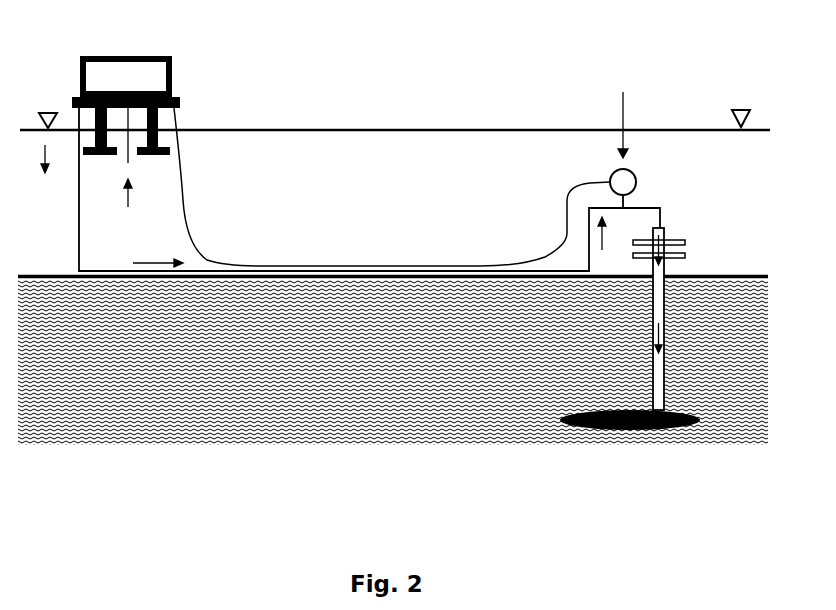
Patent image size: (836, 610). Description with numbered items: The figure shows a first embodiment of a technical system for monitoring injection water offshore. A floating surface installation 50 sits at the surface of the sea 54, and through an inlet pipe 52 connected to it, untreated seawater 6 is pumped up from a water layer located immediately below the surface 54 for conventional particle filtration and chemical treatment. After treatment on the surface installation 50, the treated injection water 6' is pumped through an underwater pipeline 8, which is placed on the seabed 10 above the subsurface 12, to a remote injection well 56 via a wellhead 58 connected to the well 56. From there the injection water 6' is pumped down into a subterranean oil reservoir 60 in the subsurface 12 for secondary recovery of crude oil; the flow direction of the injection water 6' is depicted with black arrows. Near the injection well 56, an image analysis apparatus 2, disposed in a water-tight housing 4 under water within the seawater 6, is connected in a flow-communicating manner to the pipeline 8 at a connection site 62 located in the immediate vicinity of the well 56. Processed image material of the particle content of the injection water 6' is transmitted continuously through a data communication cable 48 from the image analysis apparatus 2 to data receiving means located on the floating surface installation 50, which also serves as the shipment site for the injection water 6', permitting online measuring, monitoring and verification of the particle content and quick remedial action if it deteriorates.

The image analysis apparatus 2 is at (632, 176).
The water-tight housing 4 is at (612, 173).
The seawater 6 is at (436, 209).
The injection water 6' is at (327, 209).
The underwater pipeline 8 is at (79, 222).
The seabed 10 is at (753, 275).
The subsurface 12 is at (163, 377).
The data communication cable 48 is at (186, 188).
The floating surface installation 50 is at (120, 70).
The inlet pipe 52 is at (128, 163).
The surface of the sea 54 is at (425, 130).
The injection well 56 is at (662, 370).
The wellhead 58 is at (670, 240).
The subterranean oil reservoir 60 is at (604, 430).
The connection site 62 is at (622, 115).